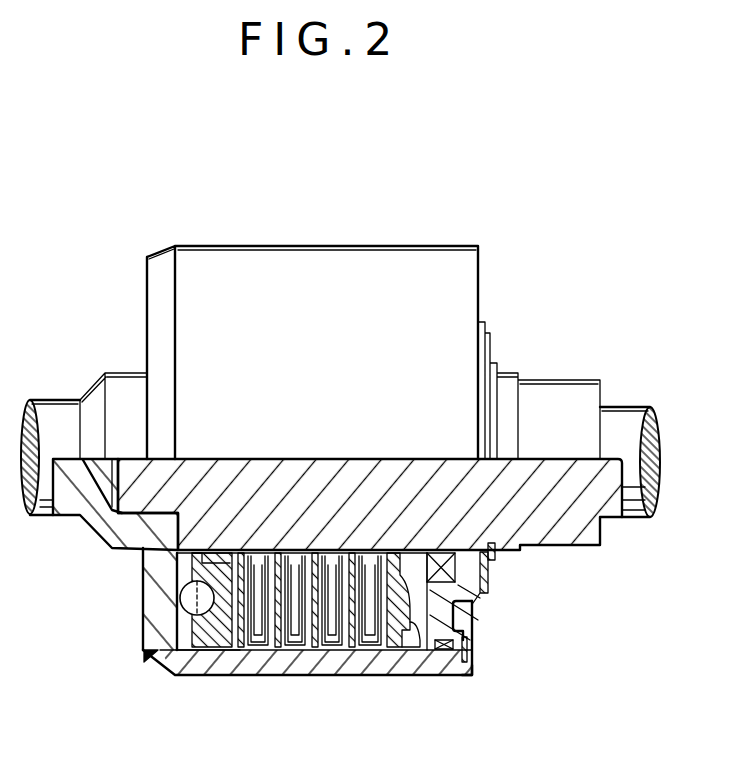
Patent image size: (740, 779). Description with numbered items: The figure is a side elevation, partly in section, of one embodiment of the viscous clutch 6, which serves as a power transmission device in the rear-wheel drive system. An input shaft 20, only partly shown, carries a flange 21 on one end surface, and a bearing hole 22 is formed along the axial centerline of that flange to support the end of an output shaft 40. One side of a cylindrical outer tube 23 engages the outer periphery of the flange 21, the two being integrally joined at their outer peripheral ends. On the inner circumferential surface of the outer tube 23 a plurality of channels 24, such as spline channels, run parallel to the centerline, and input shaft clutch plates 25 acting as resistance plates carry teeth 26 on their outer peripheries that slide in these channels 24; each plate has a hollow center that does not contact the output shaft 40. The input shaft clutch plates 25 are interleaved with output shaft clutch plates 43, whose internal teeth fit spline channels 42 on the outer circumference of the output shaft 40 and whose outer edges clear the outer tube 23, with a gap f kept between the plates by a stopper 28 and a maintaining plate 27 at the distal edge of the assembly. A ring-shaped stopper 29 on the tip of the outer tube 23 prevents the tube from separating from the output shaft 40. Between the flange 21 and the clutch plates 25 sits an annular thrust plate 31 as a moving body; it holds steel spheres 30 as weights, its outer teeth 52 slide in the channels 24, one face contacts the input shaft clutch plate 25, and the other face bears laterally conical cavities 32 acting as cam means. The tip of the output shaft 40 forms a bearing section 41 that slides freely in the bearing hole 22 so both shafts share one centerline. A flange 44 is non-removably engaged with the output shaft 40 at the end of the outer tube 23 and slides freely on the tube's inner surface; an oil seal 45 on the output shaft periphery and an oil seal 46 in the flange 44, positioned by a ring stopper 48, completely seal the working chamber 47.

The viscous clutch 6 is at (405, 240).
The input shaft 20 is at (52, 400).
The output shaft 40 is at (628, 407).
The bearing section 41 is at (100, 527).
The bearing hole 22 is at (160, 515).
The channels 42 is at (180, 590).
The laterally conical cavities 32 is at (200, 583).
The flange 21 is at (150, 630).
The steel spheres 30 is at (142, 651).
The thrust plate 31 is at (180, 673).
The output shaft clutch plates 43 is at (195, 655).
The teeth 52 is at (210, 660).
The gap f is at (250, 660).
The teeth 26 is at (278, 660).
The input shaft clutch plates 25 is at (314, 660).
The channels 24 is at (350, 655).
The maintaining plate 27 is at (395, 655).
The stopper 28 is at (446, 652).
The cylindrical outer tube 23 is at (440, 667).
The oil seal 46 is at (466, 678).
The stopper 29 is at (468, 648).
The flange 44 is at (457, 622).
The working chamber 47 is at (452, 568).
The oil seal 45 is at (489, 572).
The stopper 48 is at (496, 552).